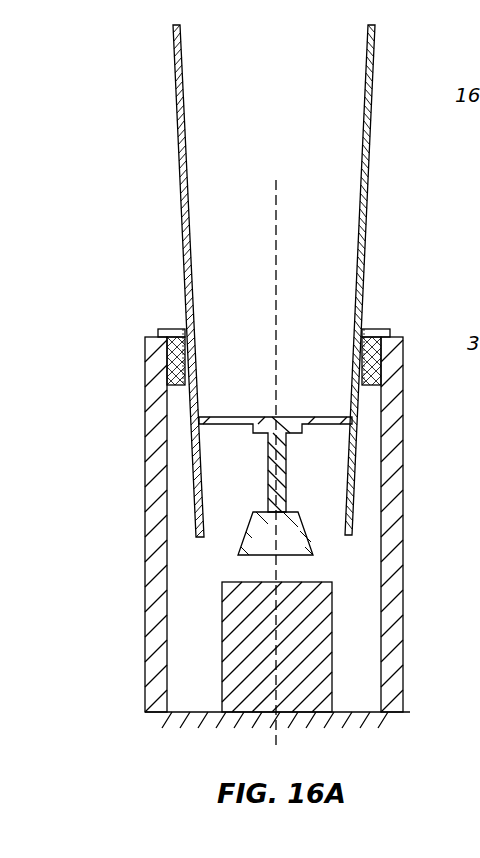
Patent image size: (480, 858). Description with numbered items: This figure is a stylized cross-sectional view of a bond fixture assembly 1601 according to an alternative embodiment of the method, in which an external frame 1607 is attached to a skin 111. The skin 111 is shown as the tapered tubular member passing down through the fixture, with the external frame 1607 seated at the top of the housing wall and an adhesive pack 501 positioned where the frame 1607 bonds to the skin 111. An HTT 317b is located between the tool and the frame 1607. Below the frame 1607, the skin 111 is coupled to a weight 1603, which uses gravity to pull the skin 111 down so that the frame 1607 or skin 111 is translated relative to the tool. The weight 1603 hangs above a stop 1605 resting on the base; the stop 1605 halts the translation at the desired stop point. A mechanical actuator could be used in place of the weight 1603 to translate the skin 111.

The assembly 1601 is at (134, 126).
The skin 111 is at (196, 510).
The adhesive pack 501 is at (187, 330).
The HTT 317b is at (153, 372).
The external frame 1607 is at (381, 330).
The weight 1603 is at (298, 546).
The stop 1605 is at (298, 656).